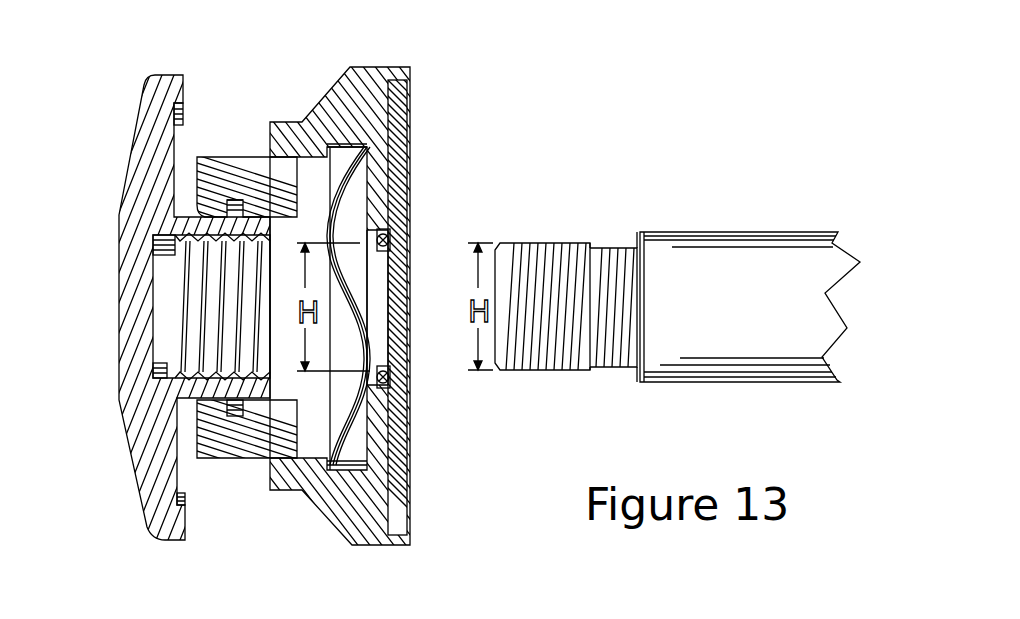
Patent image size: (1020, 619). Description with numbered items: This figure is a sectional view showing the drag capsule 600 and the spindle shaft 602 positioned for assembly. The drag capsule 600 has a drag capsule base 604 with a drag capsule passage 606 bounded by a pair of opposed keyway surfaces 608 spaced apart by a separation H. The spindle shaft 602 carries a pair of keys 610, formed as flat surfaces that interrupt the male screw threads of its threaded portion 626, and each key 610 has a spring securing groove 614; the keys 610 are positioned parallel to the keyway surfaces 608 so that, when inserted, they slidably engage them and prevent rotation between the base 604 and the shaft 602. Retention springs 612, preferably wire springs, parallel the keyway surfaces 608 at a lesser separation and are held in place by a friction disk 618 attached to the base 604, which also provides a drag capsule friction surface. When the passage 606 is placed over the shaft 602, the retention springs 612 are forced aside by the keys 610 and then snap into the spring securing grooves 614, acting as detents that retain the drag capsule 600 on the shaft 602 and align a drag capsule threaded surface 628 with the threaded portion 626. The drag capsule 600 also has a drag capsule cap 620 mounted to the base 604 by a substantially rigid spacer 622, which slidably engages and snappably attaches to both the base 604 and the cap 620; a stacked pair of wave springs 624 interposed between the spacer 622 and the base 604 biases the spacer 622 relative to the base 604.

The drag capsule 600 is at (677, 243).
The spindle shaft 602 is at (758, 213).
The drag capsule base 604 is at (430, 68).
The drag capsule passage 606 is at (383, 298).
The keyway surfaces 608 is at (355, 333).
The keys 610 is at (528, 243).
The retention springs 612 is at (395, 232).
The spring securing grooves 614 is at (607, 248).
The friction disk 618 is at (400, 134).
The drag capsule cap 620 is at (130, 105).
The substantially rigid spacer 622 is at (227, 157).
The wave springs 624 is at (350, 443).
The threaded portion 626 is at (591, 238).
The drag capsule threaded surface 628 is at (190, 333).